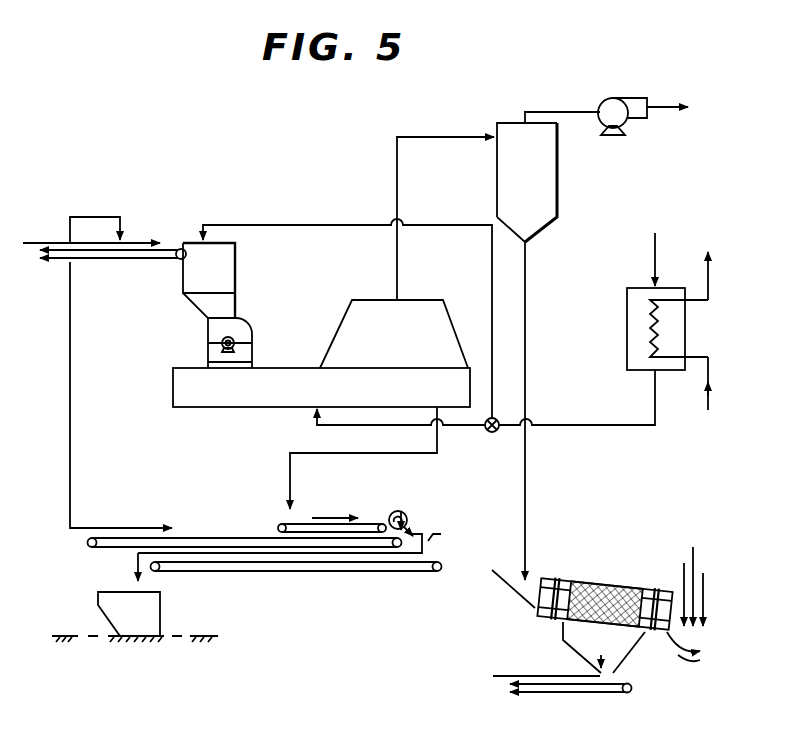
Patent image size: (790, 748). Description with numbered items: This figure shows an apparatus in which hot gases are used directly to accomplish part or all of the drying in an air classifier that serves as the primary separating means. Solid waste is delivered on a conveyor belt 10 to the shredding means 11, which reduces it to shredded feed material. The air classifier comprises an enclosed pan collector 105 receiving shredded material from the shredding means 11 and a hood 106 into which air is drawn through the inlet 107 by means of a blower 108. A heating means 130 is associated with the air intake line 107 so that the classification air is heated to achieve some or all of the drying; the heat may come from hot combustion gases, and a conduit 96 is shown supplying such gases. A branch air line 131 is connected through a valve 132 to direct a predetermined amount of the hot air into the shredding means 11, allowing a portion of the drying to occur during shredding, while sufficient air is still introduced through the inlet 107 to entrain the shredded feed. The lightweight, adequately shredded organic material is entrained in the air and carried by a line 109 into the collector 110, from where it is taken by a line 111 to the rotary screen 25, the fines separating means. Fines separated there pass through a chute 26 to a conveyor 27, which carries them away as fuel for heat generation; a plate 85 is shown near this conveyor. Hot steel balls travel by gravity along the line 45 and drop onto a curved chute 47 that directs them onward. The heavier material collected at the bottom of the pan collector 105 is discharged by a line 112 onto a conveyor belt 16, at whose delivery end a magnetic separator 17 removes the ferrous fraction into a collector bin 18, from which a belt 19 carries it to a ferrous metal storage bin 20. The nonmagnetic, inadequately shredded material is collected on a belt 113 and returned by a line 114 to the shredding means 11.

The conveyor belt 10 is at (106, 262).
The shredding means 11 is at (253, 290).
The conveyor belt 16 is at (290, 522).
The magnetic separator 17 is at (409, 514).
The collector bin 18 is at (440, 533).
The belt 19 is at (378, 572).
The ferrous metal storage bin 20 is at (153, 613).
The rotary screen 25 is at (585, 586).
The chute 26 is at (566, 640).
The conveyor 27 is at (546, 696).
The line 45 is at (700, 562).
The curved chute 47 is at (690, 660).
The plate 85 is at (503, 675).
The conduit 96 is at (708, 402).
The pan collector 105 is at (213, 410).
The hood 106 is at (342, 330).
The inlet 107 is at (503, 432).
The blower 108 is at (620, 100).
The line 109 is at (395, 175).
The collector 110 is at (550, 197).
The line 111 is at (526, 338).
The line 112 is at (340, 453).
The belt 113 is at (222, 537).
The line 114 is at (68, 465).
The heating means 130 is at (627, 316).
The branch air line 131 is at (254, 225).
The valve 132 is at (496, 418).